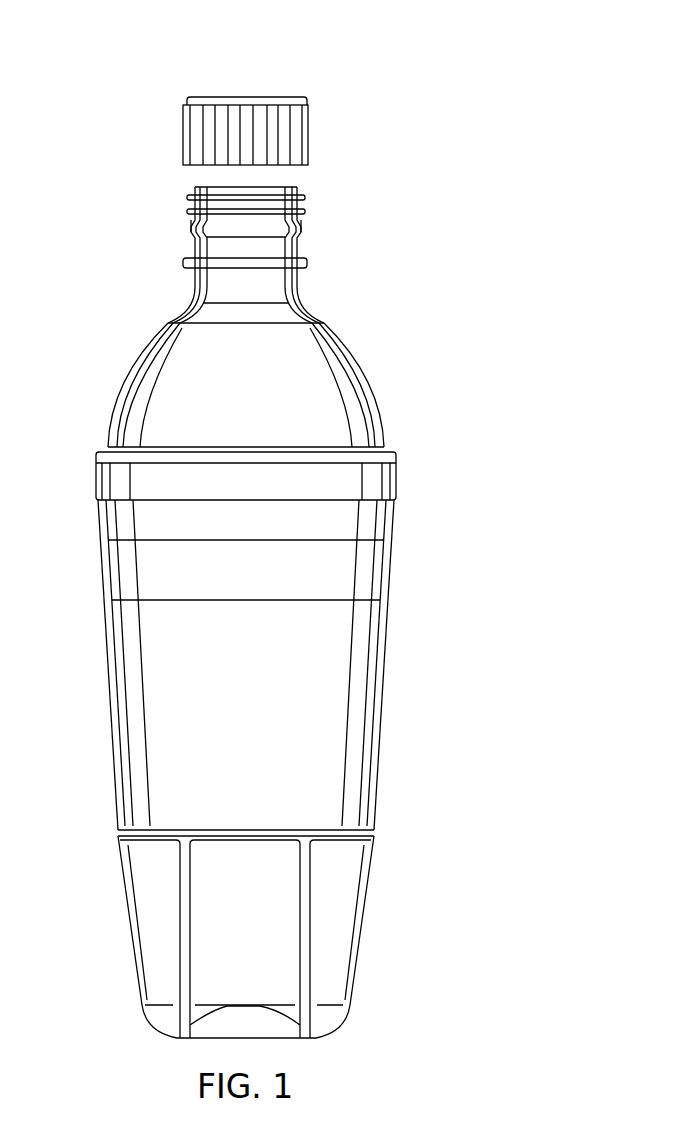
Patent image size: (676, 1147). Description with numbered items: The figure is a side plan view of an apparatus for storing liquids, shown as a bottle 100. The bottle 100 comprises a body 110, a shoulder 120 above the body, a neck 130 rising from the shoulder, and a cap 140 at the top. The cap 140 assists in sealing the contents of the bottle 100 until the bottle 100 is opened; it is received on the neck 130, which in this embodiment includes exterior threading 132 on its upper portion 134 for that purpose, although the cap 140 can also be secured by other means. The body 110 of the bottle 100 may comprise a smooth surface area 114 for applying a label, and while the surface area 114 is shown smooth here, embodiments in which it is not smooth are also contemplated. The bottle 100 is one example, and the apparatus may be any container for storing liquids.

The bottle 100 is at (98, 98).
The body 110 is at (430, 452).
The smooth surface area 114 is at (108, 692).
The shoulder 120 is at (121, 393).
The neck 130 is at (301, 285).
The exterior threading 132 is at (304, 198).
The upper portion 134 is at (192, 221).
The cap 140 is at (311, 121).